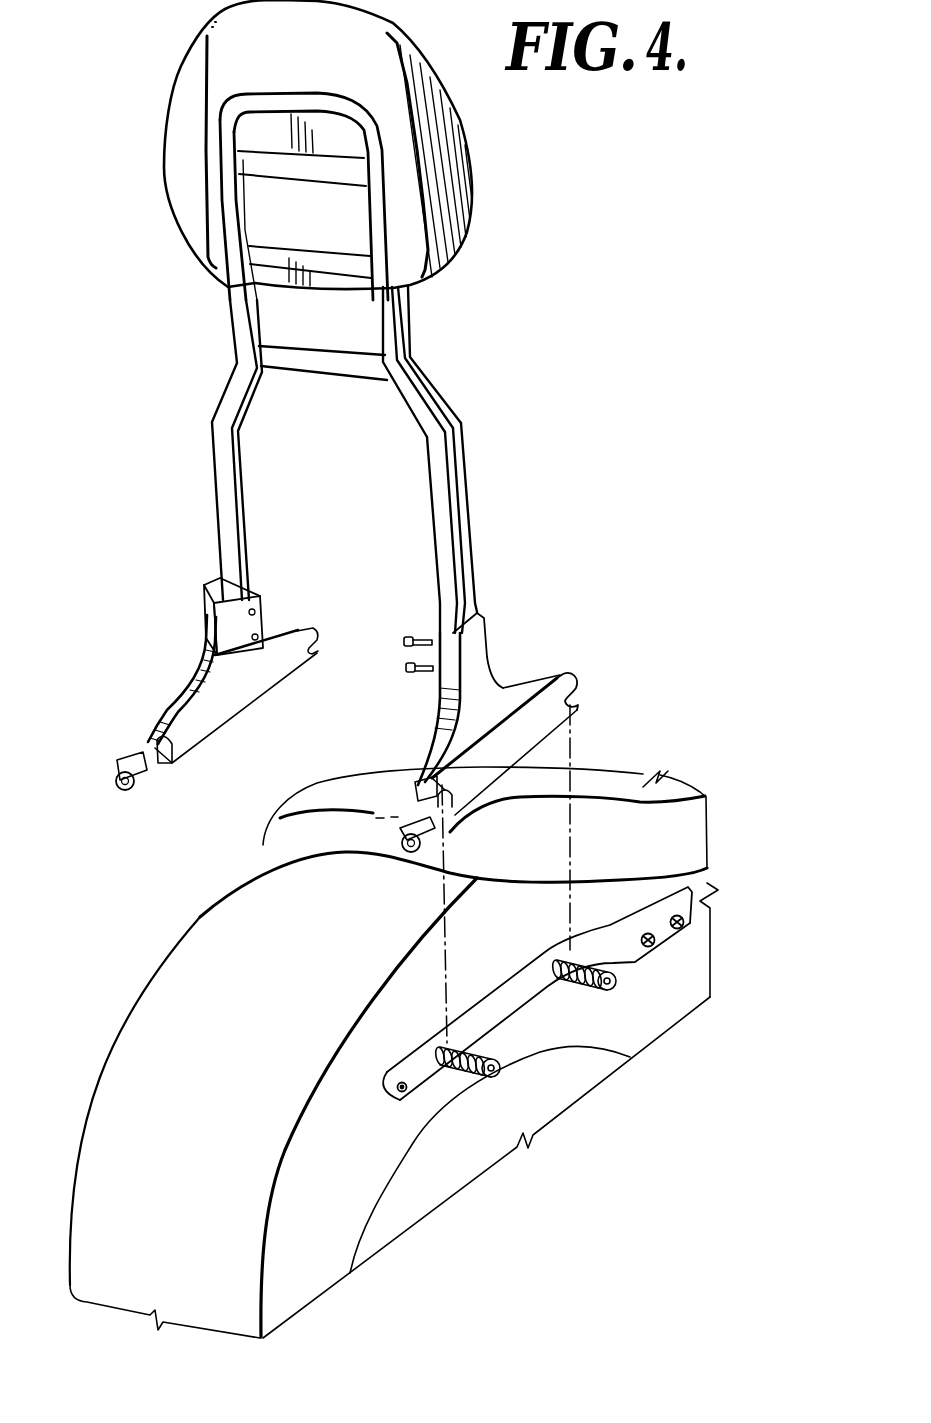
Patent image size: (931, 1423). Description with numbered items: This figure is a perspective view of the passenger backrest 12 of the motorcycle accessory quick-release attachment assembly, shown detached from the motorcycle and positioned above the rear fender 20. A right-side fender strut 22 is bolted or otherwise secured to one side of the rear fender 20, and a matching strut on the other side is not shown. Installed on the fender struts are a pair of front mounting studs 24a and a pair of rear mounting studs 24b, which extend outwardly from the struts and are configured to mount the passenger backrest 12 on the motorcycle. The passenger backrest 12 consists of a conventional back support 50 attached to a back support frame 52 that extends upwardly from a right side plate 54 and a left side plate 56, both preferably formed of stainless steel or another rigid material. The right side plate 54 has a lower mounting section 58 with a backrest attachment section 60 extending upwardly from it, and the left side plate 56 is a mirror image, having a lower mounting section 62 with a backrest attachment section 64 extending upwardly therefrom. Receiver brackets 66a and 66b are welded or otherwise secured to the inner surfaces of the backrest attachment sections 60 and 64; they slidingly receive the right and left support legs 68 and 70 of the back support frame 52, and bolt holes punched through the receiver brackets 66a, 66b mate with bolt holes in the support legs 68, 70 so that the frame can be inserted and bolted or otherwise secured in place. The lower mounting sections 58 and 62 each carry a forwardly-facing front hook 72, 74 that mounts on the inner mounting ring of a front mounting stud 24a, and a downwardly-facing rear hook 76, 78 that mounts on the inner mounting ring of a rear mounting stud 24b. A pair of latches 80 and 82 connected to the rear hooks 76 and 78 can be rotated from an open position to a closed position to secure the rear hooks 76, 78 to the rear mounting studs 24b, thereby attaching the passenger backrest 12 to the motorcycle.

The passenger backrest 12 is at (217, 306).
The rear fender 20 is at (165, 963).
The right-side fender strut 22 is at (513, 1012).
The front mounting studs 24a is at (590, 990).
The rear mounting studs 24b is at (490, 1083).
The back support 50 is at (462, 157).
The back support frame 52 is at (406, 331).
The right side plate 54 is at (513, 690).
The left side plate 56 is at (213, 671).
The lower mounting section 58 is at (528, 729).
The backrest attachment section 60 is at (478, 636).
The lower mounting section 62 is at (253, 680).
The backrest attachment section 64 is at (209, 612).
The receiver bracket 66a is at (443, 697).
The receiver bracket 66b is at (258, 604).
The right support leg 68 is at (472, 531).
The left support leg 70 is at (239, 514).
The front hook 72 is at (573, 689).
The front hook 74 is at (300, 633).
The rear hook 76 is at (418, 799).
The rear hook 78 is at (190, 717).
The latch 80 is at (427, 831).
The latch 82 is at (155, 785).